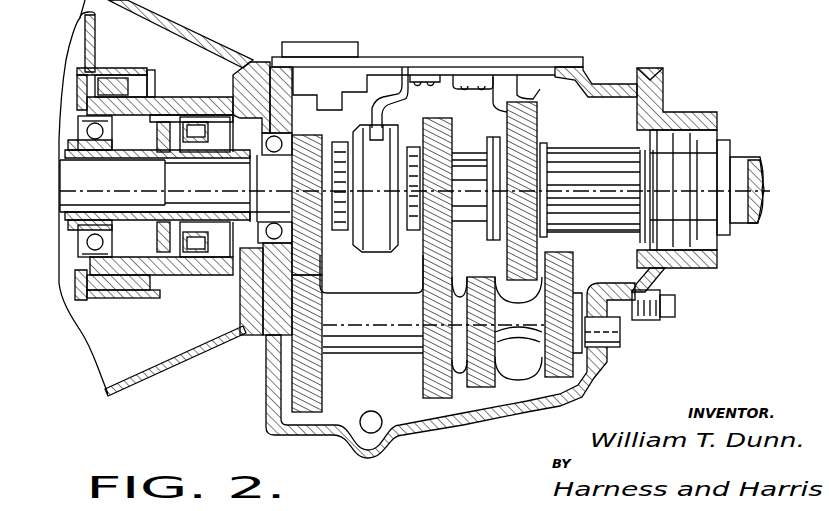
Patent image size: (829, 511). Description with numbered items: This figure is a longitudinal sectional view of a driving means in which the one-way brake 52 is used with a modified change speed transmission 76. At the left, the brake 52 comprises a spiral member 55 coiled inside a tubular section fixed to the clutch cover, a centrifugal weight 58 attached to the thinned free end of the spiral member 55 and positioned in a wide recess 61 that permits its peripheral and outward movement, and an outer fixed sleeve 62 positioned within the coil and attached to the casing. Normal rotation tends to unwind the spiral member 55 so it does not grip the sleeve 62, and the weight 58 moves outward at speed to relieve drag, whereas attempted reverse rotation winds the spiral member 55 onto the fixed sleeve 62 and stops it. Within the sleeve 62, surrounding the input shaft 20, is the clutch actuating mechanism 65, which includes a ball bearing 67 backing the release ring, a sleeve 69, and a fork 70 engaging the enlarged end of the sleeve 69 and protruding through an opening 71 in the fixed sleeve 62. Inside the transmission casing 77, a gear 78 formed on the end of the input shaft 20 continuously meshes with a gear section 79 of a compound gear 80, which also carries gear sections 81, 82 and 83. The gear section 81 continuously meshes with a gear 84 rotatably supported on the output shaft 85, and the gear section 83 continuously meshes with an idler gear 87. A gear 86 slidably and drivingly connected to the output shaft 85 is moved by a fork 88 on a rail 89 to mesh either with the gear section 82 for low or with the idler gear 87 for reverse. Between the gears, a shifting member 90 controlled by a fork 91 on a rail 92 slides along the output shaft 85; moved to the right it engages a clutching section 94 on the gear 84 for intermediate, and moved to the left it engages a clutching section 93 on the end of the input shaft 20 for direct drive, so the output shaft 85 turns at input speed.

The input shaft 20 is at (207, 192).
The one-way brake 52 is at (113, 65).
The spiral member 55 is at (135, 88).
The centrifugal weight 58 is at (172, 85).
The wide recess 61 is at (158, 85).
The outer fixed sleeve 62 is at (177, 96).
The actuating mechanism 65 is at (117, 141).
The ball bearing 67 is at (80, 241).
The sleeve 69 is at (152, 228).
The fork 70 is at (203, 255).
The opening 71 is at (220, 140).
The change speed transmission 76 is at (526, 56).
The transmission casing 77 is at (607, 83).
The gear 78 is at (298, 142).
The gear section 79 is at (316, 256).
The compound gear 80 is at (357, 363).
The gear section 81 is at (428, 276).
The gear section 82 is at (483, 280).
The gear section 83 is at (553, 372).
The gear 84 is at (470, 120).
The transmission output shaft 85 is at (748, 170).
The gear 86 is at (533, 117).
The idler gear 87 is at (563, 253).
The fork 88 is at (530, 100).
The rail 89 is at (533, 68).
The shifting member 90 is at (370, 252).
The fork 91 is at (402, 100).
The rail 92 is at (390, 72).
The clutching section 93 is at (339, 142).
The clutching section 94 is at (412, 145).